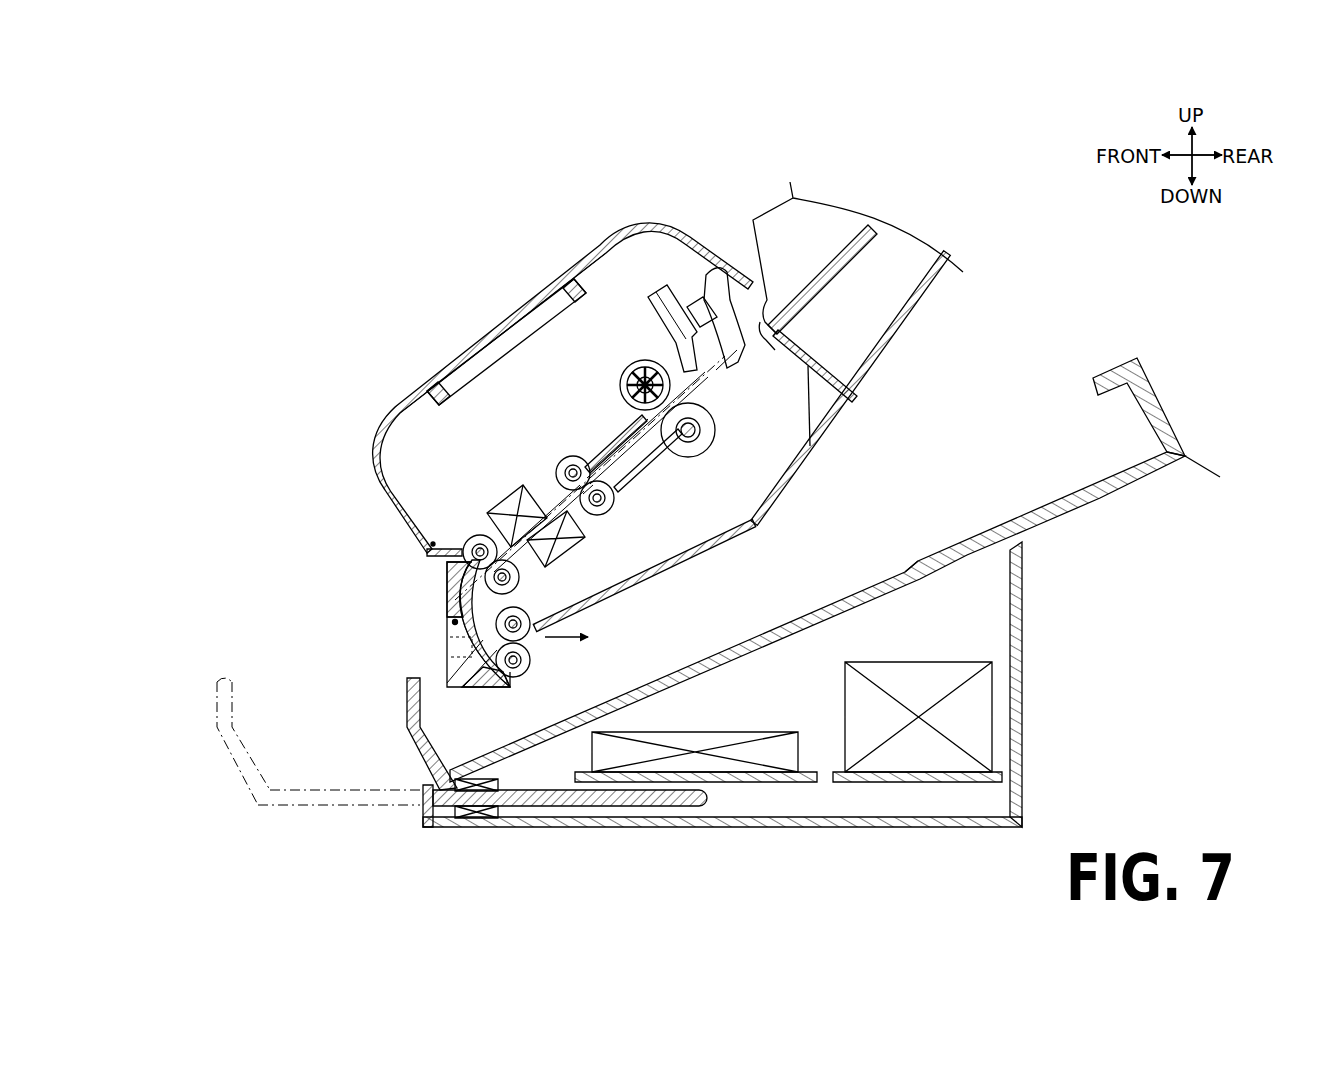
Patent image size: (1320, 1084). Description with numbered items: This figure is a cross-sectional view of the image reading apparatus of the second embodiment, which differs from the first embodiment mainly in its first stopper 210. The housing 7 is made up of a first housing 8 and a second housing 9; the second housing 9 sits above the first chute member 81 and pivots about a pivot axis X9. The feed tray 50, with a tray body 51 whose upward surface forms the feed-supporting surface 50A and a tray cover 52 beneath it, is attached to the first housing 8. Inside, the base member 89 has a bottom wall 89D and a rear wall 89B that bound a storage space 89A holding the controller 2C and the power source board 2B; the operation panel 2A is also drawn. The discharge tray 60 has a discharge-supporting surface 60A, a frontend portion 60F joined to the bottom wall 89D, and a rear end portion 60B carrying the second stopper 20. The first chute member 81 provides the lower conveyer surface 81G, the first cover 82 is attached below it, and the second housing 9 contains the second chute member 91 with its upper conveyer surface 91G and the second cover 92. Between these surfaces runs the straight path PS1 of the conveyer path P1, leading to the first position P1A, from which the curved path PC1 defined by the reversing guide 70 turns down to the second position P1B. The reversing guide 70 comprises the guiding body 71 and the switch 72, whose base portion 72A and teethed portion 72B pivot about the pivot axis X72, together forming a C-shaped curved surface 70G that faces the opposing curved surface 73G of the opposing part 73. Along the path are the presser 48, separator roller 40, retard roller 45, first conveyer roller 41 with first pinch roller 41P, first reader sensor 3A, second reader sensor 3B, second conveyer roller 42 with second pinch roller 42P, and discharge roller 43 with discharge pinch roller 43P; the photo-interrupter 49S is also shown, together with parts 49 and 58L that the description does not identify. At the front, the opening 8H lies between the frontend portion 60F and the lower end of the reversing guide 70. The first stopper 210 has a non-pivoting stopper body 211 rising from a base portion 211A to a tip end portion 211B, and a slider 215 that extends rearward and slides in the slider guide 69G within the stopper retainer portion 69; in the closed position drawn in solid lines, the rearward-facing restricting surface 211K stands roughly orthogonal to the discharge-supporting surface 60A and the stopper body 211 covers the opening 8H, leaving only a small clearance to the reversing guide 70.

The operation panel 2A is at (506, 337).
The power source board 2B is at (917, 722).
The controller 2C is at (696, 757).
The first reader sensor 3A is at (587, 539).
The second reader sensor 3B is at (517, 493).
The housing 7 is at (716, 613).
The first housing 8 is at (730, 717).
The opening 8H is at (379, 724).
The second housing 9 is at (539, 389).
The second stopper 20 is at (1164, 394).
The separator roller 40 is at (633, 357).
The first conveyer roller 41 is at (563, 430).
The first pinch roller 41P is at (622, 501).
The second conveyer roller 42 is at (478, 514).
The second pinch roller 42P is at (547, 577).
The discharge roller 43 is at (544, 668).
The discharge pinch roller 43P is at (574, 618).
The retard roller 45 is at (718, 439).
The presser 48 is at (650, 318).
The lever 49 is at (752, 334).
The photo-interrupter 49S is at (681, 285).
The feed tray 50 is at (836, 287).
The feed-supporting surface 50A is at (876, 204).
The tray body 51 is at (822, 296).
The tray cover 52 is at (870, 388).
The lock portion 58L is at (767, 231).
The discharge tray 60 is at (817, 612).
The discharge-supporting surface 60A is at (918, 523).
The rear end portion 60B is at (1232, 476).
The frontend portion 60F is at (390, 833).
The stopper retainer portion 69 is at (415, 816).
The slider guide 69G is at (491, 849).
The reversing guide 70 is at (413, 602).
The curved surface 70G is at (462, 705).
The guiding body 71 is at (409, 666).
The switch 72 is at (398, 561).
The base portion 72A is at (371, 568).
The teethed portion 72B is at (415, 651).
The opposing part 73 is at (510, 623).
The opposing curved surface 73G is at (418, 623).
The first chute member 81 is at (669, 473).
The lower conveyer surface 81G is at (759, 391).
The first cover 82 is at (699, 555).
The base member 89 is at (776, 713).
The storage space 89A is at (978, 800).
The rear wall 89B is at (1069, 684).
The bottom wall 89D is at (722, 851).
The second chute member 91 is at (615, 410).
The upper conveyer surface 91G is at (605, 430).
The second cover 92 is at (478, 333).
The first stopper 210 is at (336, 749).
The stopper body 211 is at (307, 745).
The base portion 211A is at (332, 843).
The tip end portion 211B is at (279, 661).
The restricting surface 211K is at (347, 788).
The slider 215 is at (570, 838).
The conveyer path P1 is at (590, 503).
The first position P1A is at (444, 519).
The second position P1B is at (506, 705).
The curved path PC1 is at (372, 590).
The straight path PS1 is at (599, 472).
The pivot axis X9 is at (423, 503).
The pivot axis X72 is at (367, 638).